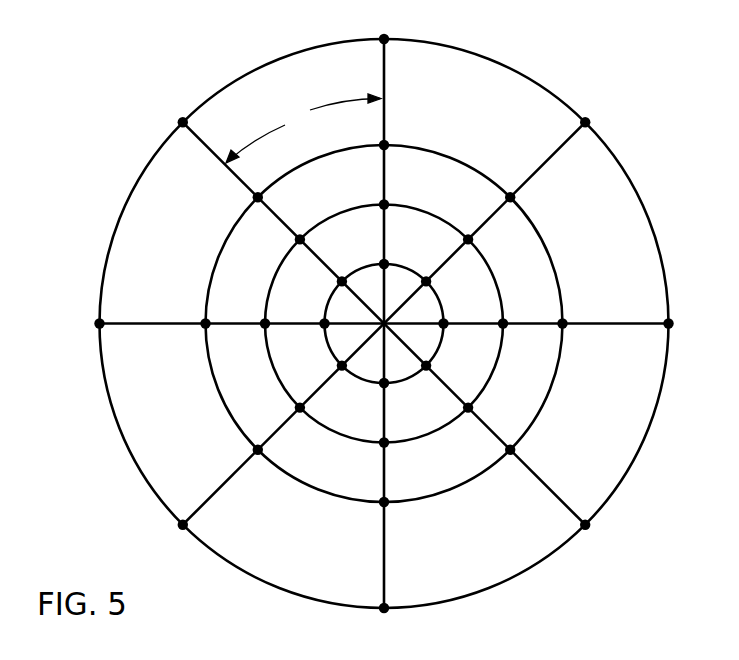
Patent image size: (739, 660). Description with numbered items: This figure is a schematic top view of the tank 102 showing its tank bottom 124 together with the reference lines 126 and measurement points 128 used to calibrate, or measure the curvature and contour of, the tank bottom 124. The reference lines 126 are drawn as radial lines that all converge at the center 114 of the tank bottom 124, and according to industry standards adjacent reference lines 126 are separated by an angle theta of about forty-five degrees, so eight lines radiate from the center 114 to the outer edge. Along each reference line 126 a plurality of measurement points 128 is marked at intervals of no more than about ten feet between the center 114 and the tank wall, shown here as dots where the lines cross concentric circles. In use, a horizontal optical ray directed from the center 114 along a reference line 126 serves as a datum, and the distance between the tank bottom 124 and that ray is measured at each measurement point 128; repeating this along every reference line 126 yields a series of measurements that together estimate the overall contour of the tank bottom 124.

The tank 102 is at (212, 48).
The tank bottom 124 is at (493, 78).
The reference lines 126 is at (178, 324).
The measurement points 128 is at (510, 195).
The center 114 is at (384, 324).